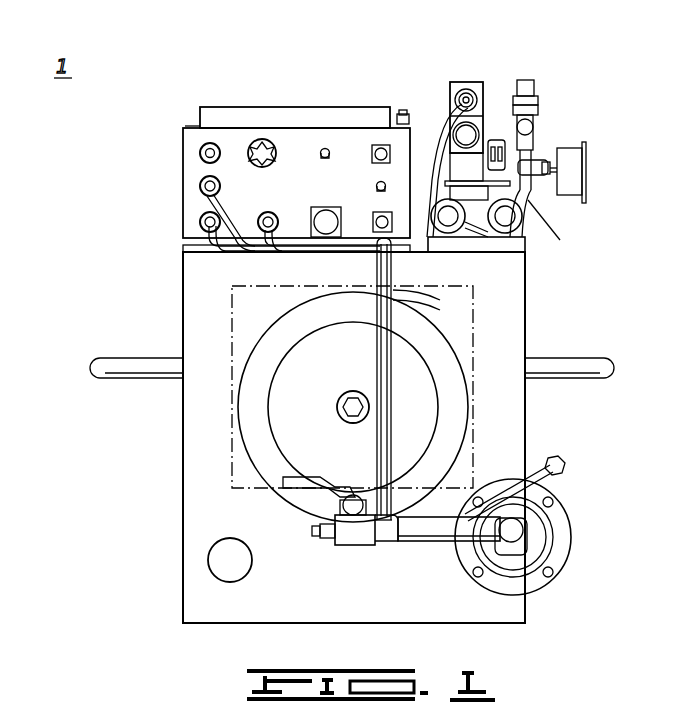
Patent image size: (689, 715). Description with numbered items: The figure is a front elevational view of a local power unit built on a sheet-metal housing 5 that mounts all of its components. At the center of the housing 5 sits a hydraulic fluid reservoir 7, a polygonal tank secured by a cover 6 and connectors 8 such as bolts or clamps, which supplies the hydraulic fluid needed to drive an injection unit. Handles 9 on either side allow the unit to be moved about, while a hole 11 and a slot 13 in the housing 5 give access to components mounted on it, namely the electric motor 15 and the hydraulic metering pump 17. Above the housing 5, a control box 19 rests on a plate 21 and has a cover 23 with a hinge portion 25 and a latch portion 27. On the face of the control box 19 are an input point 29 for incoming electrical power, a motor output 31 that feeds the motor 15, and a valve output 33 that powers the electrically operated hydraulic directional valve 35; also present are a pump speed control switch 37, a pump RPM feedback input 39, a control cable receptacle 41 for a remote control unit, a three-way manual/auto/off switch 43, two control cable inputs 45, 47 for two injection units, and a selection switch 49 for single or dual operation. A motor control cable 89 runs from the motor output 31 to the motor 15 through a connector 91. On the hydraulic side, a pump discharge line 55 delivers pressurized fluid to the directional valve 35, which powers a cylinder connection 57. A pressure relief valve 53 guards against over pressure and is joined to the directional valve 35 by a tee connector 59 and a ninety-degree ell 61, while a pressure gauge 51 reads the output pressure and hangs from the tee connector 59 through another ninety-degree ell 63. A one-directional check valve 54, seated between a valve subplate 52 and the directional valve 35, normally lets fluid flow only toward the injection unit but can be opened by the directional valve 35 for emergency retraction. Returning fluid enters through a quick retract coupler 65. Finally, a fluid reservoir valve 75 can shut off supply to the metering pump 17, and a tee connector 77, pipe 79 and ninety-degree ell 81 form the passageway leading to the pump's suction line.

The housing 5 is at (183, 280).
The cover 6 is at (320, 362).
The hydraulic fluid reservoir 7 is at (237, 398).
The connectors 8 is at (343, 402).
The handles 9 is at (92, 368).
The hole 11 is at (208, 560).
The slot 13 is at (458, 565).
The electric motor 15 is at (574, 533).
The hydraulic metering pump 17 is at (525, 545).
The control box 19 is at (183, 200).
The plate 21 is at (183, 249).
The cover 23 is at (200, 108).
The hinge portion 25 is at (190, 128).
The latch portion 27 is at (402, 112).
The input point 29 is at (200, 153).
The motor output 31 is at (200, 222).
The valve output 33 is at (200, 186).
The hydraulic directional valve 35 is at (470, 82).
The pump speed control switch 37 is at (267, 139).
The pump RPM feedback input 39 is at (272, 212).
The control cable receptacle 41 is at (326, 240).
The manual/auto/off switch 43 is at (323, 148).
The control cable input 45 is at (381, 145).
The control cable input 47 is at (398, 232).
The selection switch 49 is at (385, 186).
The pressure gauge 51 is at (587, 176).
The valve subplate 52 is at (468, 222).
The pressure relief valve 53 is at (530, 80).
The one-directional check valve 54 is at (530, 196).
The pump discharge line 55 is at (400, 292).
The cylinder connection 57 is at (522, 225).
The tee connector 59 is at (548, 150).
The 90° ell 61 is at (532, 207).
The 90° ell 63 is at (550, 168).
The quick retract coupler 65 is at (455, 236).
The fluid reservoir valve 75 is at (283, 483).
The tee connector 77 is at (322, 530).
The pipe 79 is at (392, 542).
The 90° ell 81 is at (524, 528).
The motor control cable 89 is at (377, 442).
The connector 91 is at (563, 463).